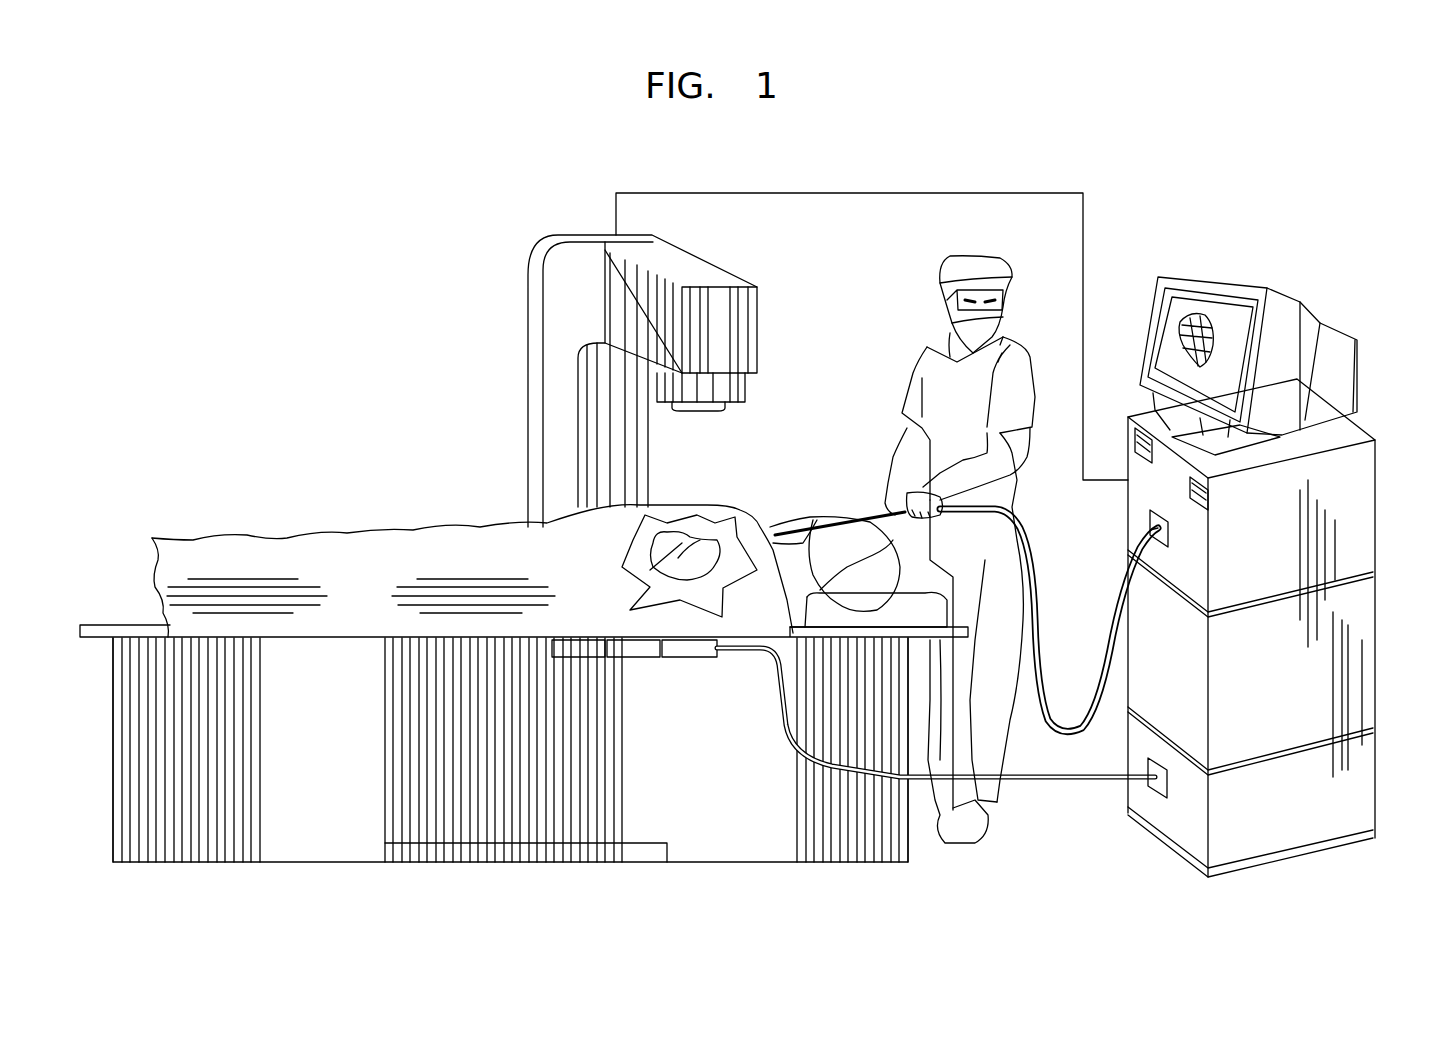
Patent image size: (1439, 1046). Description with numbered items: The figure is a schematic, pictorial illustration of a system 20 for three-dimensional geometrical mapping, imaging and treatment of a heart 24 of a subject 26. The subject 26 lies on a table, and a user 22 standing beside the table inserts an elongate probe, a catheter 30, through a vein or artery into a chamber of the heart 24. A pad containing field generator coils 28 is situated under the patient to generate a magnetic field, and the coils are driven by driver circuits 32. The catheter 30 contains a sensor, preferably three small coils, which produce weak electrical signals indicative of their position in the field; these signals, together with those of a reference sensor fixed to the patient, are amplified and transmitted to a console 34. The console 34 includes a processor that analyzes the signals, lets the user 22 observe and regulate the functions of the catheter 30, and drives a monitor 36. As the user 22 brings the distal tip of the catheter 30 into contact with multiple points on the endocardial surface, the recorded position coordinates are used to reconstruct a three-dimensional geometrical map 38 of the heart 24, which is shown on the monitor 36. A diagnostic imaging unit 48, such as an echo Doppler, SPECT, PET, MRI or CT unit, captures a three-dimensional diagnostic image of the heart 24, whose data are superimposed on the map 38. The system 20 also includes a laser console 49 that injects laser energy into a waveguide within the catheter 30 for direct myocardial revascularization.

The system 20 is at (1292, 138).
The user 22 is at (933, 397).
The heart 24 is at (690, 535).
The subject 26 is at (863, 590).
The field generator coils 28 is at (698, 653).
The catheter 30 is at (633, 567).
The driver circuits 32 is at (1197, 798).
The console 34 is at (1197, 558).
The monitor 36 is at (1222, 283).
The three-dimensional geometrical map 38 is at (1177, 333).
The diagnostic imaging unit 48 is at (555, 365).
The laser console 49 is at (1362, 600).